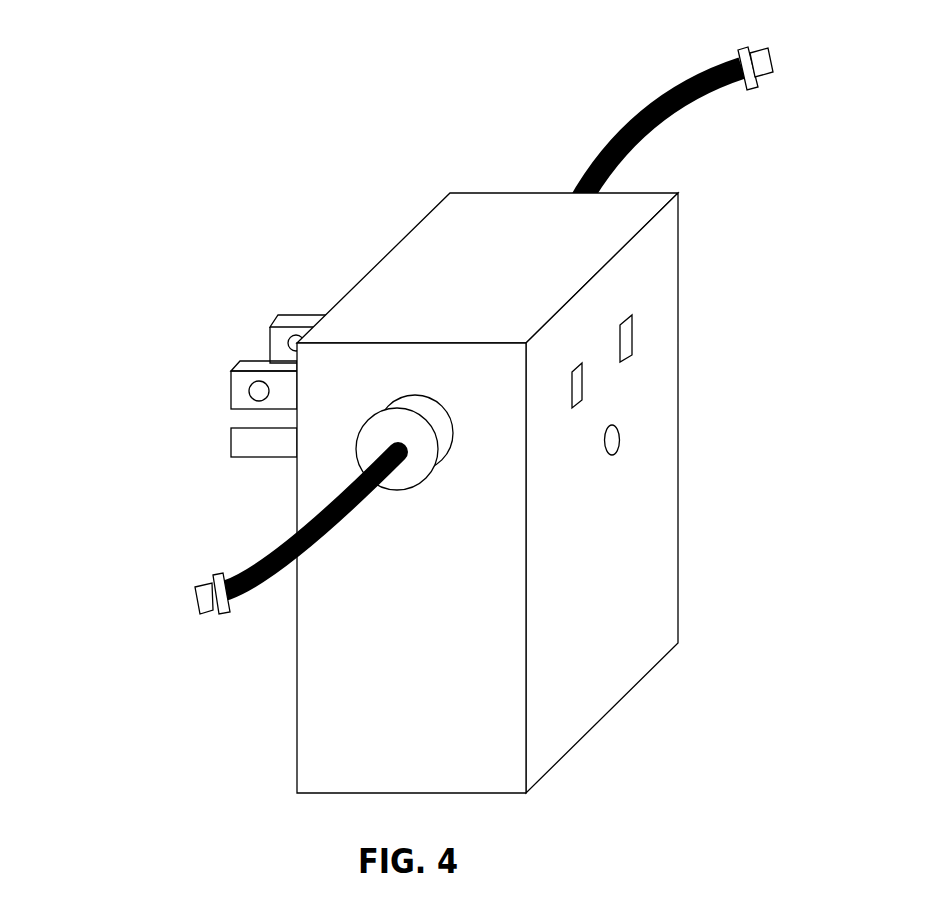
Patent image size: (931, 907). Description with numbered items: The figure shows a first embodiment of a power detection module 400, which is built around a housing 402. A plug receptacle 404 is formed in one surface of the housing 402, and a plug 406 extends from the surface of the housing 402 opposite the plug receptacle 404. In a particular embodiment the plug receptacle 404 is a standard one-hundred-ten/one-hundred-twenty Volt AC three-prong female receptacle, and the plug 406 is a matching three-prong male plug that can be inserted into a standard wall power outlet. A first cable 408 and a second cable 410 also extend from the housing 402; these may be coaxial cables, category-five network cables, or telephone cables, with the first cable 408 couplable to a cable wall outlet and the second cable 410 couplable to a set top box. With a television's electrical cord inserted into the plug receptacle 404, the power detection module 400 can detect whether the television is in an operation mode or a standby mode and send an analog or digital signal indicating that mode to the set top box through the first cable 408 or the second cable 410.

The power detection module 400 is at (282, 134).
The housing 402 is at (445, 256).
The plug receptacle 404 is at (608, 404).
The plug 406 is at (235, 387).
The first cable 408 is at (207, 602).
The second cable 410 is at (742, 63).